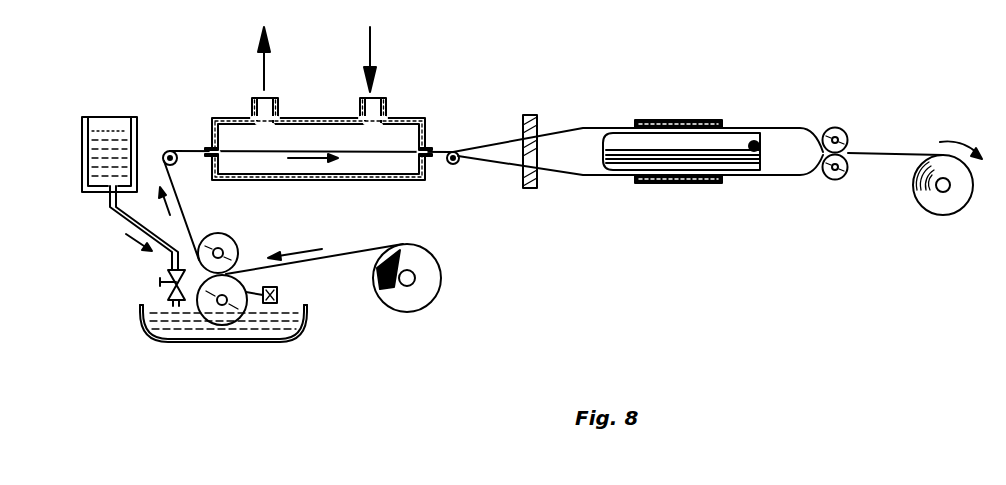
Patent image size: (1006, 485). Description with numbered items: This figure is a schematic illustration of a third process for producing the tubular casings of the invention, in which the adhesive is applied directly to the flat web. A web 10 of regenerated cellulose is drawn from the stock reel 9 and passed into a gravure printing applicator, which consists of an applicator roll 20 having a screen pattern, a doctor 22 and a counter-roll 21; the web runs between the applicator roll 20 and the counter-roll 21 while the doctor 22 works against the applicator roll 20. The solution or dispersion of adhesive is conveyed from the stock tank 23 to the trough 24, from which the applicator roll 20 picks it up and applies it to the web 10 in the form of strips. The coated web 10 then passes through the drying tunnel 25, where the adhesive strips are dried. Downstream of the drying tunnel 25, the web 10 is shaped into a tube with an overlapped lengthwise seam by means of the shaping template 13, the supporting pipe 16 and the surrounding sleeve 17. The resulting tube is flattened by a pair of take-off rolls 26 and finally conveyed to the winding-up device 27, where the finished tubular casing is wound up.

The stock reel 9 is at (432, 286).
The web 10 is at (356, 247).
The shaping template 13 is at (535, 115).
The supporting pipe 16 is at (735, 143).
The surrounding sleeve 17 is at (697, 120).
The applicator roll 20 is at (226, 320).
The counter-roll 21 is at (231, 238).
The doctor 22 is at (277, 292).
The stock tank 23 is at (82, 140).
The trough 24 is at (252, 343).
The drying tunnel 25 is at (305, 118).
The pair of take-off rolls 26 is at (843, 131).
The winding-up device 27 is at (940, 205).